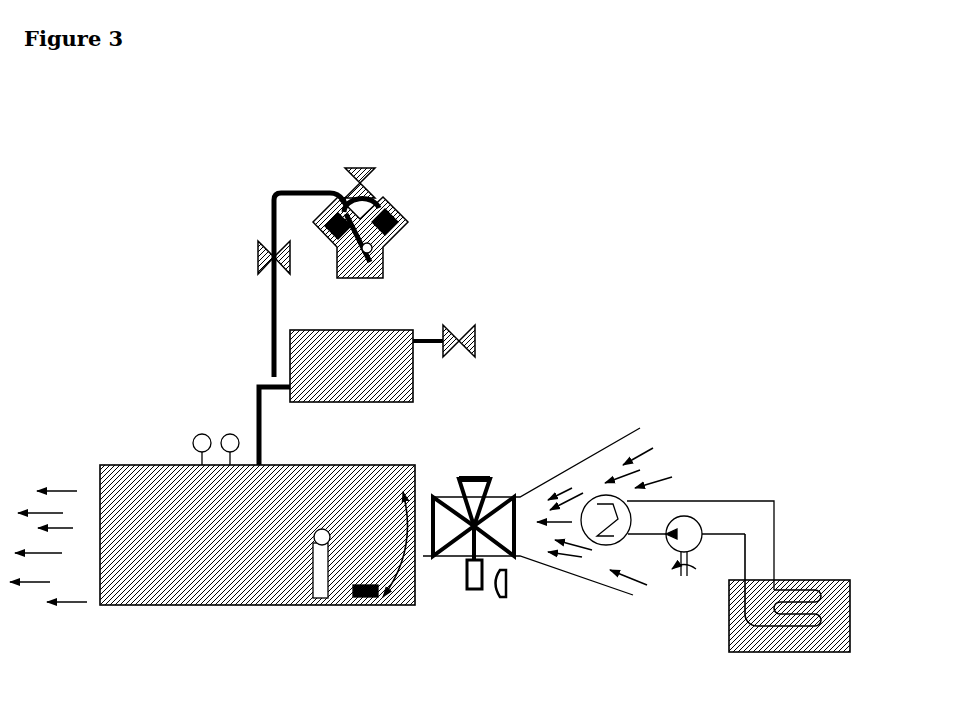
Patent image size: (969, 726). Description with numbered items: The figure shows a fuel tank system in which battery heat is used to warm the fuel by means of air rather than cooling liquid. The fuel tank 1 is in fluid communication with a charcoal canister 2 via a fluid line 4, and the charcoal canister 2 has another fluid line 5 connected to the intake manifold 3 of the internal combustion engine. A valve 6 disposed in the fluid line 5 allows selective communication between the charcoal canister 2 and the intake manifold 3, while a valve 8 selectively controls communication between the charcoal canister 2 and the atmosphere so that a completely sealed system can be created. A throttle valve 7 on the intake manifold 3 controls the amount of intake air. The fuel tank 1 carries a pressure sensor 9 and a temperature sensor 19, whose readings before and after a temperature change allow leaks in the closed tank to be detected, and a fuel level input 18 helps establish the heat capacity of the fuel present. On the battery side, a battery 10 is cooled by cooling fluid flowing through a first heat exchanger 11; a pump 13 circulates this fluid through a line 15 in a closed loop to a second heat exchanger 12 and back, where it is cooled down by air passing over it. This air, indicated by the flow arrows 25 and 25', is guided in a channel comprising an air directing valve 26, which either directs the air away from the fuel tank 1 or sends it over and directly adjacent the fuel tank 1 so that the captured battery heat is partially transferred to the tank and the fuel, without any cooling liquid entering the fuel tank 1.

The fuel tank 1 is at (140, 463).
The charcoal canister 2 is at (288, 368).
The intake manifold 3 is at (377, 207).
The fluid line 4 is at (254, 420).
The fluid line 5 is at (268, 210).
The valve 6 is at (257, 258).
The throttle valve 7 is at (347, 182).
The valve 8 is at (437, 328).
The pressure sensor 9 is at (194, 436).
The battery 10 is at (806, 578).
The first heat exchanger 11 is at (801, 632).
The second heat exchanger 12 is at (597, 492).
The pump 13 is at (683, 579).
The line 15 is at (735, 492).
The fuel level input 18 is at (325, 544).
The temperature sensor 19 is at (220, 430).
The air flow arrows 25 is at (604, 561).
The exhaust gas flow arrows 25' is at (69, 593).
The air directing valve 26 is at (449, 482).